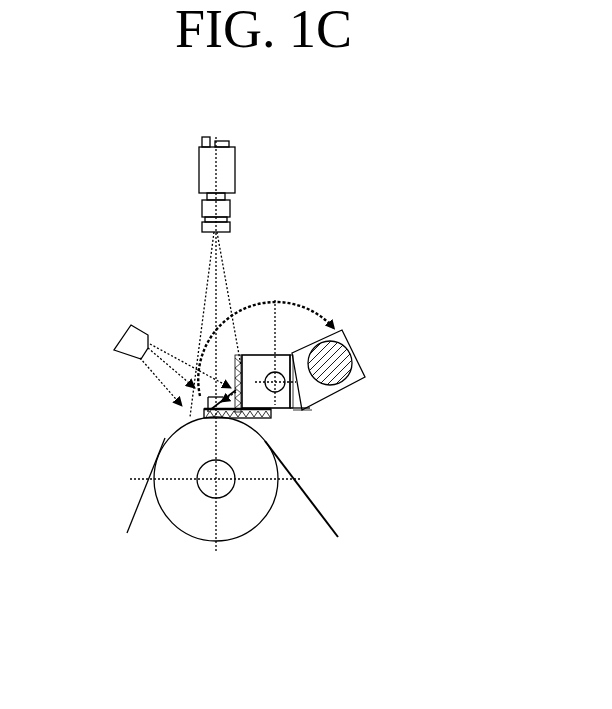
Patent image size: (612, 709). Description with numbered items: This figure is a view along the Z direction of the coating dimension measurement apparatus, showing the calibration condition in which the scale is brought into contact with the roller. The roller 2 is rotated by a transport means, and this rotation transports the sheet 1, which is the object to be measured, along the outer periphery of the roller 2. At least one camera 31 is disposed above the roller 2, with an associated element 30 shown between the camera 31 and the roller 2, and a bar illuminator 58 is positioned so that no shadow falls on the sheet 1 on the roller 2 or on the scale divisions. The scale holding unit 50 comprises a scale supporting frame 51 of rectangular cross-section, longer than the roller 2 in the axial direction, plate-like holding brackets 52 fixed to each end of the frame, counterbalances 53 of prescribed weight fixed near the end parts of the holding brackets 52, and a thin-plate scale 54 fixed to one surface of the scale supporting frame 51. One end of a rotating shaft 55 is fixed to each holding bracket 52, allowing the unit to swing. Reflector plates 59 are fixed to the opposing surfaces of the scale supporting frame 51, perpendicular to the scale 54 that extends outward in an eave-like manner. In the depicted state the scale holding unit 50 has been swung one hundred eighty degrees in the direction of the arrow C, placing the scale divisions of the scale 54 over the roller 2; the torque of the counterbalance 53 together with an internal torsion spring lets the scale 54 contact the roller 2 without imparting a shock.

The sheet 1 is at (332, 522).
The roller 2 is at (168, 465).
The lens 30 is at (202, 207).
The camera 31 is at (199, 162).
The scale holding unit 50 is at (299, 304).
The scale supporting frame 51 is at (290, 357).
The plate-like holding bracket 52 is at (307, 322).
The counterbalance 53 is at (368, 362).
The thin-plate scale 54 is at (272, 432).
The rotating shaft 55 is at (293, 411).
The bar illuminator 58 is at (127, 330).
The reflector plate 59 is at (291, 320).
The arrow C is at (245, 352).